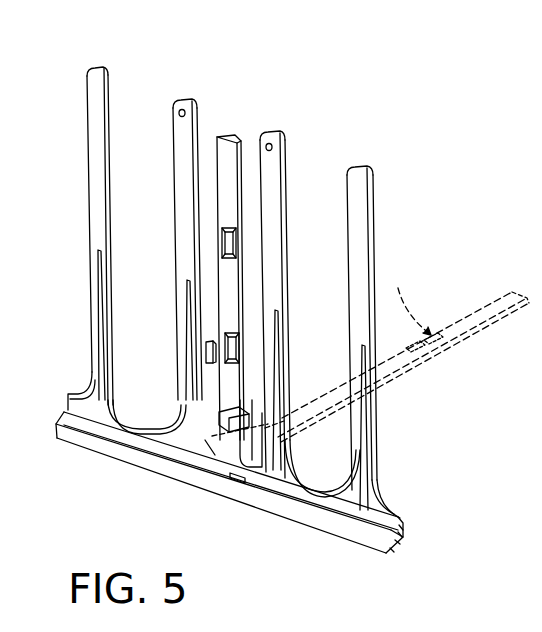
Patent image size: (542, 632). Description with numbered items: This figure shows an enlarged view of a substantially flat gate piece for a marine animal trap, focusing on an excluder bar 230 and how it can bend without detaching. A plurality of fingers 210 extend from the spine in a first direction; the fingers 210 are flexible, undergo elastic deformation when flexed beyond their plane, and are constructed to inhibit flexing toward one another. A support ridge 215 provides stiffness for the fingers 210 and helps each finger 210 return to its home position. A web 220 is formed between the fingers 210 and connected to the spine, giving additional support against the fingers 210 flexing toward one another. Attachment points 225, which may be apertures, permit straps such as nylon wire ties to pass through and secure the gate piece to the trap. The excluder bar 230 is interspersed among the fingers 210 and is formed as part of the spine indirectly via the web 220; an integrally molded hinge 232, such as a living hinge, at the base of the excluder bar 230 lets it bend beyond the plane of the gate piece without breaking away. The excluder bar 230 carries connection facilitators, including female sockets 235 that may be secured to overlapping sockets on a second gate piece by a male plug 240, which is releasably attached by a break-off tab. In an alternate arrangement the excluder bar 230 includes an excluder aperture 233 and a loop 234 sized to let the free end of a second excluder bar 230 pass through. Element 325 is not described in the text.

The finger 210 is at (178, 100).
The support ridge 215 is at (95, 406).
The web 220 is at (314, 497).
The attachment point 225 is at (113, 448).
The excluder bar 230 is at (229, 160).
The hinge 232 is at (242, 455).
The excluder aperture 233 is at (215, 450).
The loop 234 is at (240, 412).
The female socket 235 is at (222, 236).
The male plug 240 is at (207, 350).
The notch 325 is at (232, 480).